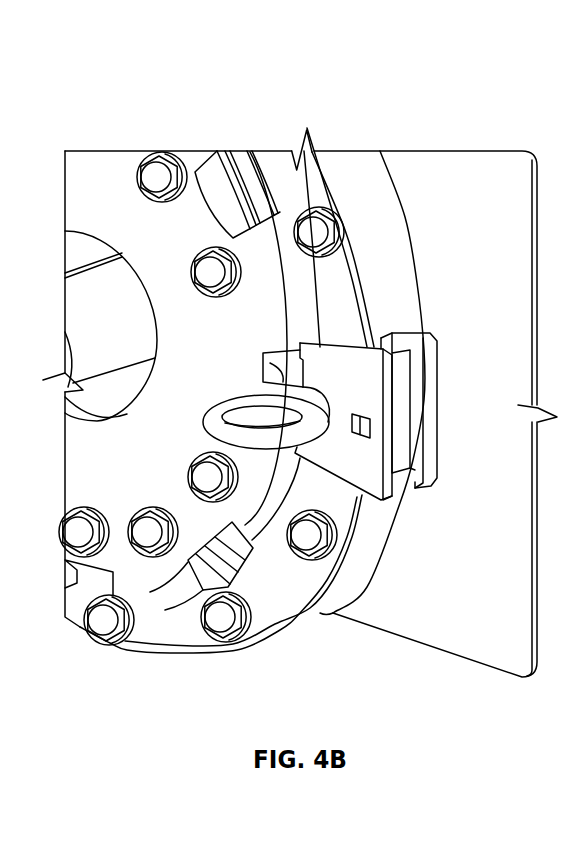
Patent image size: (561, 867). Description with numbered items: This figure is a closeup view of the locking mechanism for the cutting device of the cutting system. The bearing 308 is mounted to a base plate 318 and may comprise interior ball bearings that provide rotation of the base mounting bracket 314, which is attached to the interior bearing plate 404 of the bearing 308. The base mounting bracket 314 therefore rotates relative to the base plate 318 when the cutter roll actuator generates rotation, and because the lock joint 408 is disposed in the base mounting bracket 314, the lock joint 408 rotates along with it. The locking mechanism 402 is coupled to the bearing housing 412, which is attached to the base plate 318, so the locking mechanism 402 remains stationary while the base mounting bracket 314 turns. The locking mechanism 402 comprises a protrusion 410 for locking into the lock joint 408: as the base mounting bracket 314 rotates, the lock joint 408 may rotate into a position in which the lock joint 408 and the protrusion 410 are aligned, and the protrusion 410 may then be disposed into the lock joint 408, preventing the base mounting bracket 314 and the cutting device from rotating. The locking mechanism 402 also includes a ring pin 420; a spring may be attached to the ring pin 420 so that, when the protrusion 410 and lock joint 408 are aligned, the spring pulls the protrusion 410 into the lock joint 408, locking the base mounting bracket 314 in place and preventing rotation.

The bearing 308 is at (410, 217).
The base mounting bracket 314 is at (292, 198).
The base plate 318 is at (485, 162).
The locking mechanism 402 is at (447, 327).
The interior bearing plate 404 is at (240, 153).
The lock joint 408 is at (235, 558).
The protrusion 410 is at (285, 375).
The bearing housing 412 is at (367, 187).
The ring pin 420 is at (207, 428).